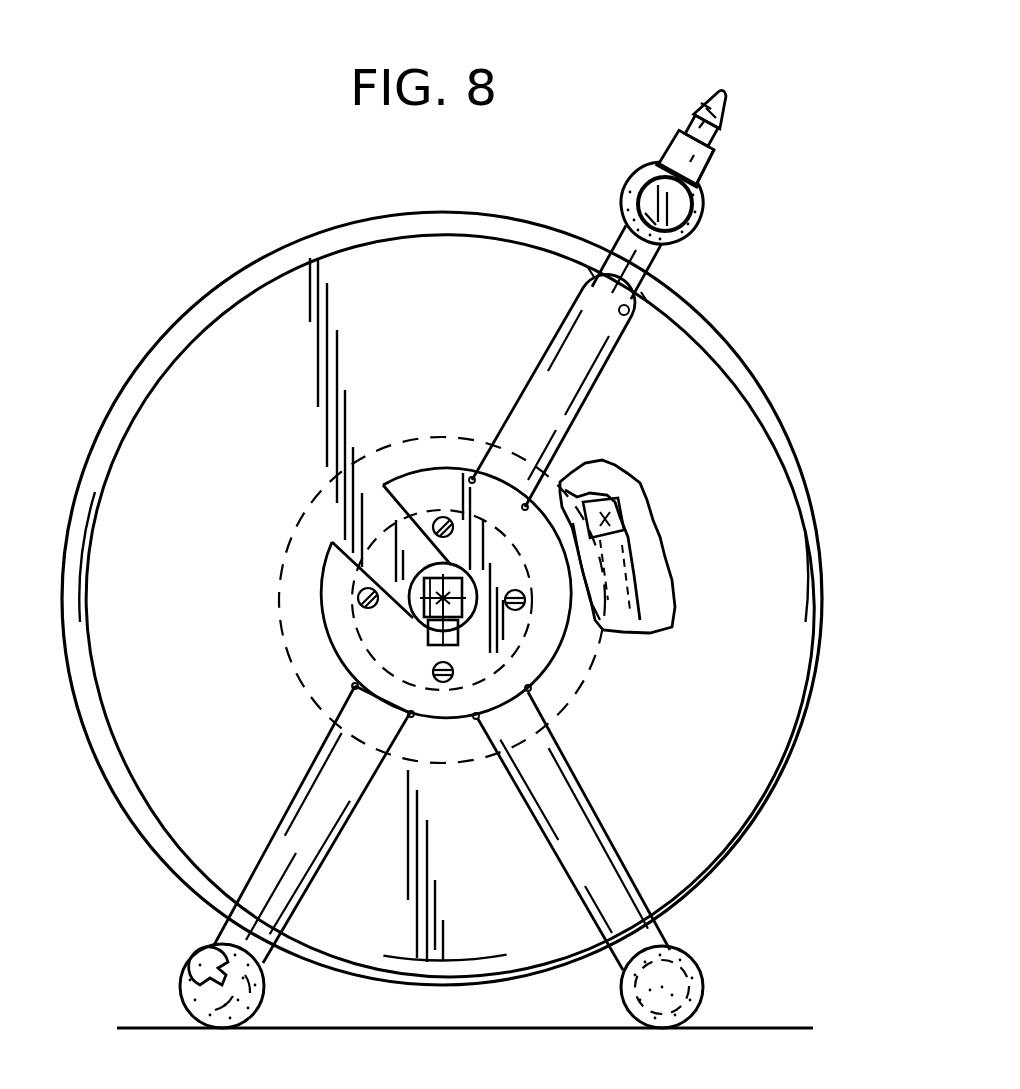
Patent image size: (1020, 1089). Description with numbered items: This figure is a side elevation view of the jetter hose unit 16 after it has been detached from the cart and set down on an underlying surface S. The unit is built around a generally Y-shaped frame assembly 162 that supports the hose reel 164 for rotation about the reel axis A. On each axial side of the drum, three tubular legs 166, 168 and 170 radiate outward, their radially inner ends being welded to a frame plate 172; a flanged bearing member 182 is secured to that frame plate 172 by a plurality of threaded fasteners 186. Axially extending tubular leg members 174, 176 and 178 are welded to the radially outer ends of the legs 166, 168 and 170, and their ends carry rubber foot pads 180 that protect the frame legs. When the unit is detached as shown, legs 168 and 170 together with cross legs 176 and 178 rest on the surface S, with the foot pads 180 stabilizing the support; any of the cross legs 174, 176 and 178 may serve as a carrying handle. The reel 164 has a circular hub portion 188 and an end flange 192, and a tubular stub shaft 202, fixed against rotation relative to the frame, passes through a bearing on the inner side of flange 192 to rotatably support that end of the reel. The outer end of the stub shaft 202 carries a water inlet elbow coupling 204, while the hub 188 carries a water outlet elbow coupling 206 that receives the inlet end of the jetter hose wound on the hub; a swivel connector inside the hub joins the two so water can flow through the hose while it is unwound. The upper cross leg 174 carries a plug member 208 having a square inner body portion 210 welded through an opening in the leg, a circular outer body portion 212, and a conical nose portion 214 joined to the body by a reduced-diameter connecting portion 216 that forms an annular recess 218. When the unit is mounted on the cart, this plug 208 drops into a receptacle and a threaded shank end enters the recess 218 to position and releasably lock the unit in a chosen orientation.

The jetter hose unit 16 is at (170, 207).
The frame assembly 162 is at (595, 787).
The hose reel 164 is at (362, 227).
The tubular leg 166 is at (575, 387).
The tubular leg 168 is at (582, 837).
The tubular leg 170 is at (297, 862).
The frame plate 172 is at (537, 658).
The tubular leg member 174 is at (703, 213).
The tubular leg member 176 is at (703, 965).
The tubular leg member 178 is at (187, 973).
The rubber foot pads 180 is at (185, 1007).
The flanged bearing member 182 is at (373, 542).
The threaded fasteners 186 is at (438, 515).
The hub portion 188 is at (612, 583).
The end flange 192 is at (720, 416).
The tubular stub shaft 202 is at (413, 610).
The water inlet elbow coupling 204 is at (425, 583).
The water outlet elbow coupling 206 is at (620, 518).
The plug member 208 is at (670, 133).
The inner body portion 210 is at (660, 168).
The outer body portion 212 is at (706, 166).
The conical nose portion 214 is at (730, 110).
The connecting portion of reduced diameter 216 is at (694, 118).
The annular recess 218 is at (712, 146).
The reel axis A is at (415, 612).
The underlying surface S is at (765, 1028).